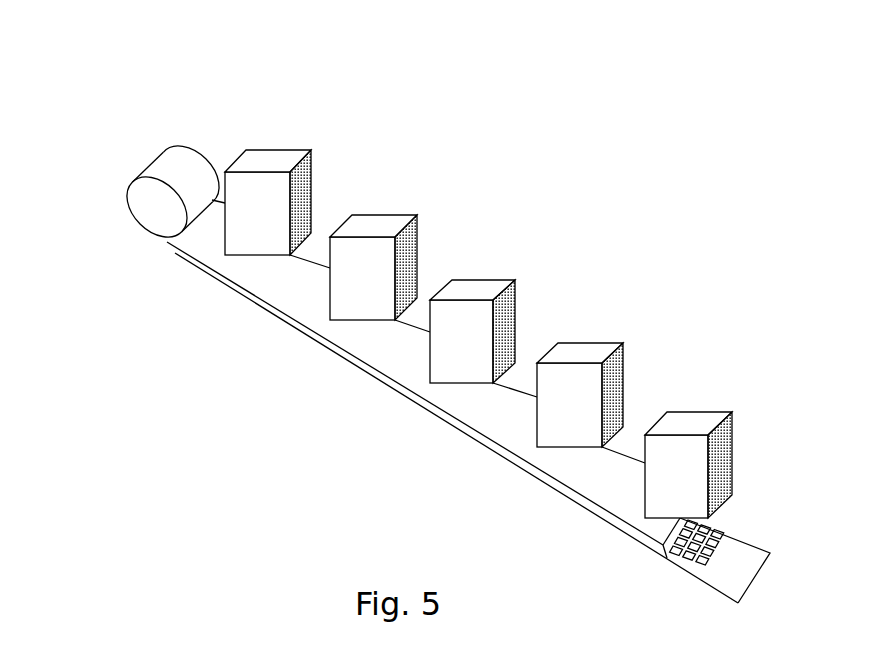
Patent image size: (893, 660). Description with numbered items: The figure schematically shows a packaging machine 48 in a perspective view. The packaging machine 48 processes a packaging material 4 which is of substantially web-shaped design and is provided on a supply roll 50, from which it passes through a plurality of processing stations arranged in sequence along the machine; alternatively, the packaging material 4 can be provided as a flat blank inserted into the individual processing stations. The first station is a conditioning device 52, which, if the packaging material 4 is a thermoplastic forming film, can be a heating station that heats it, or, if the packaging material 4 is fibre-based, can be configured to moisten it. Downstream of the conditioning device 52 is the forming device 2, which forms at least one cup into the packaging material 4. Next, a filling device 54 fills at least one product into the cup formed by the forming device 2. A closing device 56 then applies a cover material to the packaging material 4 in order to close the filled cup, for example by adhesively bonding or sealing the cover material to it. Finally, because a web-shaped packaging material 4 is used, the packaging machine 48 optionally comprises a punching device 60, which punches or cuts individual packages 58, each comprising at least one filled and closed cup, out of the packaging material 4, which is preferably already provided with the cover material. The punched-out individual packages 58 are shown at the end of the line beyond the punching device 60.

The forming device 2 is at (378, 227).
The packaging material 4 is at (207, 242).
The packaging machine 48 is at (663, 150).
The supply roll 50 is at (150, 210).
The conditioning device 52 is at (281, 157).
The filling device 54 is at (478, 280).
The closing device 56 is at (578, 348).
The individual packages 58 is at (698, 565).
The punching device 60 is at (693, 413).